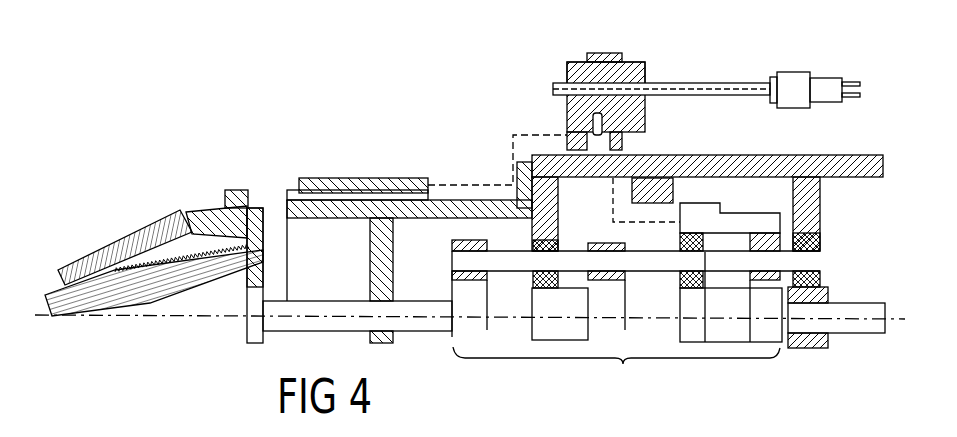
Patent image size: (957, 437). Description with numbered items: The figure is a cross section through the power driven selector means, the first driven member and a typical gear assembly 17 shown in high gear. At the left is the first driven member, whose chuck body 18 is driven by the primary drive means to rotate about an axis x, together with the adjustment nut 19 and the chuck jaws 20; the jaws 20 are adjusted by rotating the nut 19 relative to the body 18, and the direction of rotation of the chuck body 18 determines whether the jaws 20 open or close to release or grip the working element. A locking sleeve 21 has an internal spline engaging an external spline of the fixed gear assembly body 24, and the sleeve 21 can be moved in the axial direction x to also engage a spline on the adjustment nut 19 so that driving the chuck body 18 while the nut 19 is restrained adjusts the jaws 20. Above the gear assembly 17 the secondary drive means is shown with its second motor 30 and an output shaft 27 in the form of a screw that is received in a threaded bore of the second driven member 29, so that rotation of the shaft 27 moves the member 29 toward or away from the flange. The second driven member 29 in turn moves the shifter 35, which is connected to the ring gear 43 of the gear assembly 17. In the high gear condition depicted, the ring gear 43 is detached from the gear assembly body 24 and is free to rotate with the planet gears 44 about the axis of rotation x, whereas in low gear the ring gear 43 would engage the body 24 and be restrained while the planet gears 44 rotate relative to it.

The gear assembly 17 is at (668, 288).
The chuck body 18 is at (137, 240).
The adjustment nut 19 is at (212, 208).
The chuck jaws 20 is at (182, 284).
The locking sleeve 21 is at (350, 180).
The gear assembly body 24 is at (865, 172).
The output shaft 27 is at (712, 90).
The second driven member 29 is at (583, 72).
The second motor 30 is at (825, 87).
The shifter 35 is at (603, 60).
The ring gear 43 is at (753, 225).
The planet gears 44 is at (700, 235).
The axis X is at (860, 320).